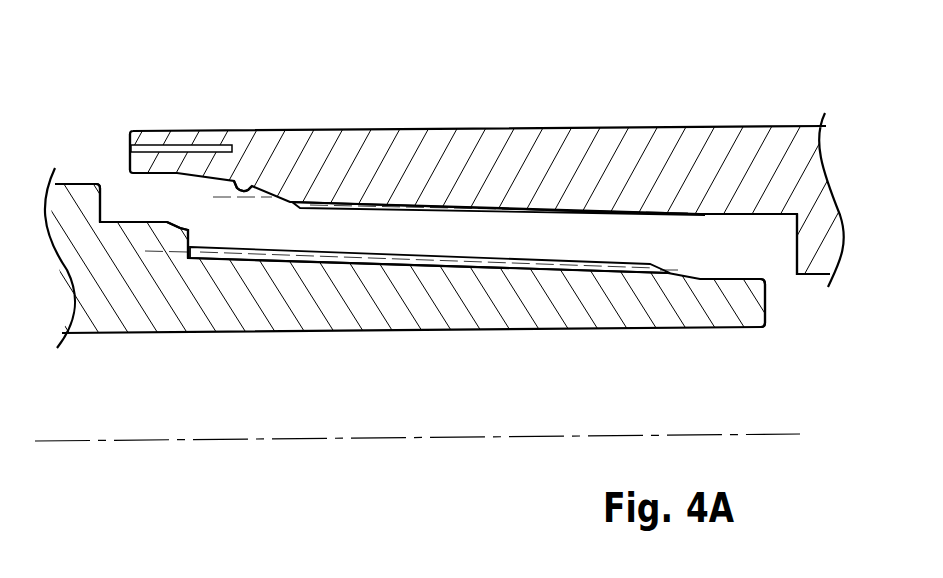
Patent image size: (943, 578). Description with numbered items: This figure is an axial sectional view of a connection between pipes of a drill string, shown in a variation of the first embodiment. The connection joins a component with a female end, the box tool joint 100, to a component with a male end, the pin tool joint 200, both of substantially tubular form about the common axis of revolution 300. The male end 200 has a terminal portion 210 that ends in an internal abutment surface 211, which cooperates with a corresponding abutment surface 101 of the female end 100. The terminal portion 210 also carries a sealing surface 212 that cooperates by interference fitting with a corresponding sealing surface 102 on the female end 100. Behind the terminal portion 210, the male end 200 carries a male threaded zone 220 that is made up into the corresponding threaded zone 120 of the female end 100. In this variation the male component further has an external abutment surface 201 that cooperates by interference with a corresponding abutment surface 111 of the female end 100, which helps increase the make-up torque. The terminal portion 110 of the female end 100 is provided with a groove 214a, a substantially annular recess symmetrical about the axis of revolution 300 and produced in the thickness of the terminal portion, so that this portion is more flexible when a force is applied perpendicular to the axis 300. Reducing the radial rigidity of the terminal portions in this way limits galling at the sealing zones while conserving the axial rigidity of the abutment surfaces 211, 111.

The box tool joint 100 is at (725, 99).
The terminal portion of the female end 110 is at (240, 108).
The abutment surface of the female end 111 is at (130, 158).
The groove 214a is at (180, 146).
The sealing surface of the female end 102 is at (250, 186).
The threaded zone of the female end 120 is at (518, 200).
The abutment surface of the female end 101 is at (795, 258).
The pin tool joint 200 is at (284, 333).
The external abutment surface 201 is at (100, 198).
The sealing surface of the terminal portion 212 is at (178, 227).
The male threaded zone 220 is at (485, 270).
The terminal portion of the male end 210 is at (745, 297).
The internal abutment surface 211 is at (768, 297).
The axis of revolution 300 is at (503, 437).